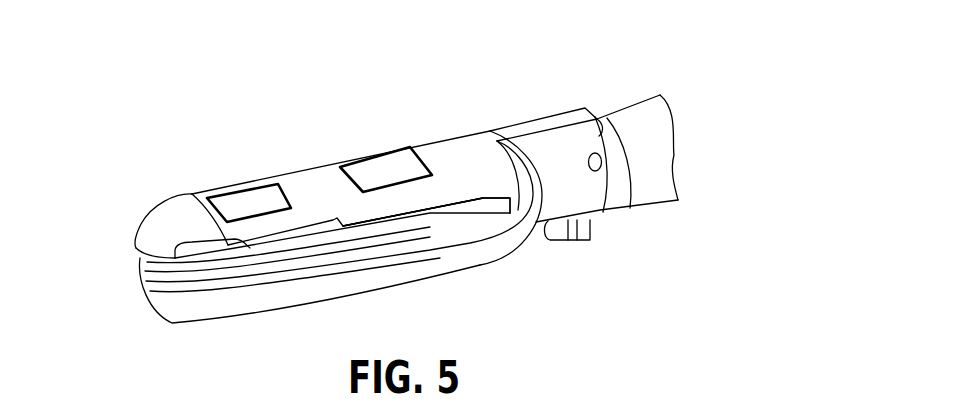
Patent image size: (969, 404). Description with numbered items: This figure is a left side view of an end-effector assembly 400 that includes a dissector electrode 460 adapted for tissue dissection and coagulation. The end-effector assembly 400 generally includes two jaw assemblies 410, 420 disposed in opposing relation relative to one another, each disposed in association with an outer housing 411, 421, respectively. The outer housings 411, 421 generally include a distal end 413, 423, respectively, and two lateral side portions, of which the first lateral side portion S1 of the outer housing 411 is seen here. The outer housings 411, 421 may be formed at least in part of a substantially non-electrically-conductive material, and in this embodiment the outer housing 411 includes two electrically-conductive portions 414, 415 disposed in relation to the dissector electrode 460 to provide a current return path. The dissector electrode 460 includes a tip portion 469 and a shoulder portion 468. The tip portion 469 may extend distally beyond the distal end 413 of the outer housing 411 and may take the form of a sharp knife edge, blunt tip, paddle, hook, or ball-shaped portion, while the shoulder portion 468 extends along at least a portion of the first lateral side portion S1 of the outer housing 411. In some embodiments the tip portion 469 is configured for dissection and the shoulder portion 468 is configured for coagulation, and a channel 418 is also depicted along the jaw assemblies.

The end-effector assembly 400 is at (123, 121).
The jaw assembly 410 is at (460, 92).
The outer housing 411 is at (178, 203).
The distal end 413 is at (147, 232).
The electrically-conductive portion 414 is at (250, 203).
The electrically-conductive portion 415 is at (388, 167).
The channel 418 is at (363, 222).
The jaw assembly 420 is at (484, 266).
The outer housing 421 is at (203, 320).
The distal end 423 is at (158, 297).
The dissector electrode 460 is at (322, 214).
The shoulder portion 468 is at (308, 232).
The tip portion 469 is at (193, 253).
The first lateral side portion S1 is at (420, 212).